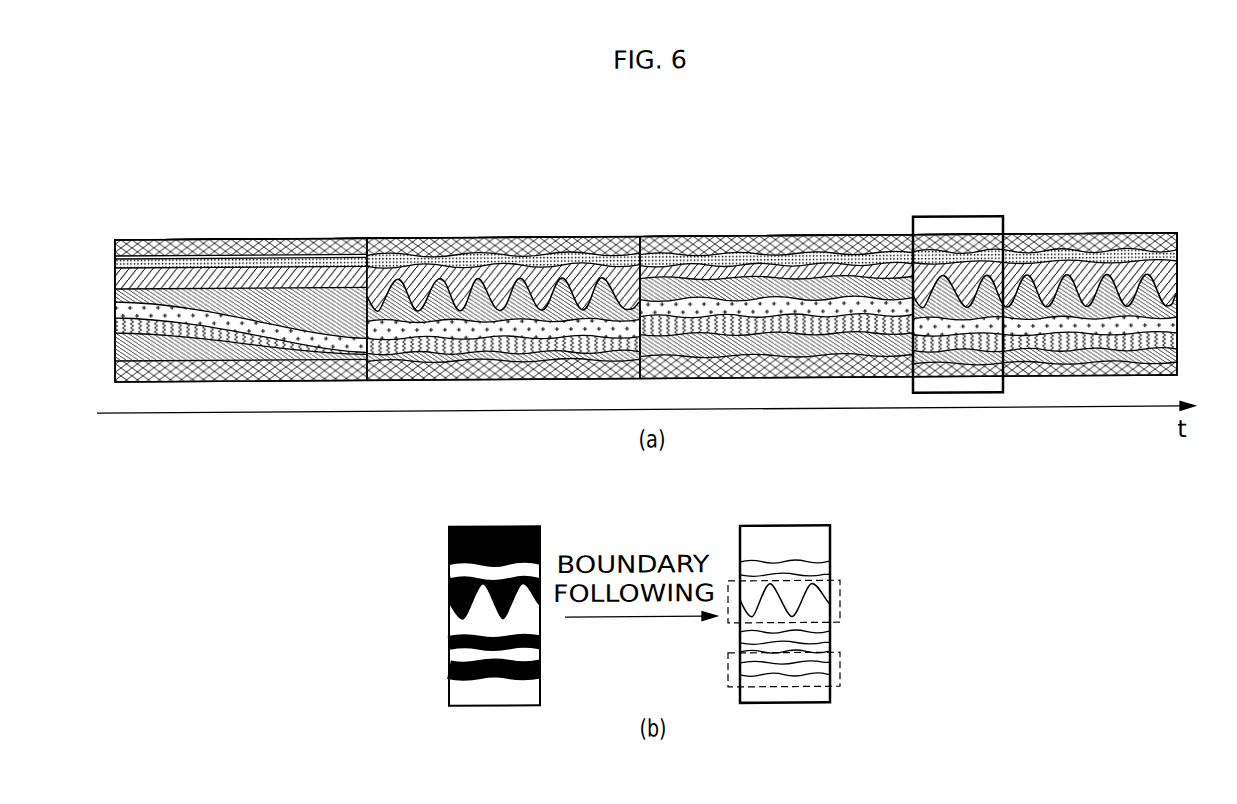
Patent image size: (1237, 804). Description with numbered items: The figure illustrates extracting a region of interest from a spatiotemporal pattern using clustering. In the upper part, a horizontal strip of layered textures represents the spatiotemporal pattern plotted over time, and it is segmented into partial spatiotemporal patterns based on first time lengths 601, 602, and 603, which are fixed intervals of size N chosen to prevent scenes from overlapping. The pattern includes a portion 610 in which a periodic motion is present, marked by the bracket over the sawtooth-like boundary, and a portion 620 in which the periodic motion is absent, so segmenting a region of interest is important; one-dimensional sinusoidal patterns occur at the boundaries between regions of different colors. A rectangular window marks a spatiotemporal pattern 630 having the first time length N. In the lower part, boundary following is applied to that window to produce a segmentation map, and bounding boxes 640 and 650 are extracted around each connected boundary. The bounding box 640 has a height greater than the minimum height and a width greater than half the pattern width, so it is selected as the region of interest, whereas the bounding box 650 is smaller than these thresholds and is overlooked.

The first time length 601 is at (455, 225).
The first time length 602 is at (535, 225).
The first time length 603 is at (591, 241).
The portion in which a periodic motion is present 610 is at (503, 238).
The portion in which the periodic motion is absent 620 is at (253, 224).
The spatiotemporal pattern having the first time length N 630 is at (958, 233).
The bounding box 640 is at (841, 604).
The bounding box 650 is at (841, 672).